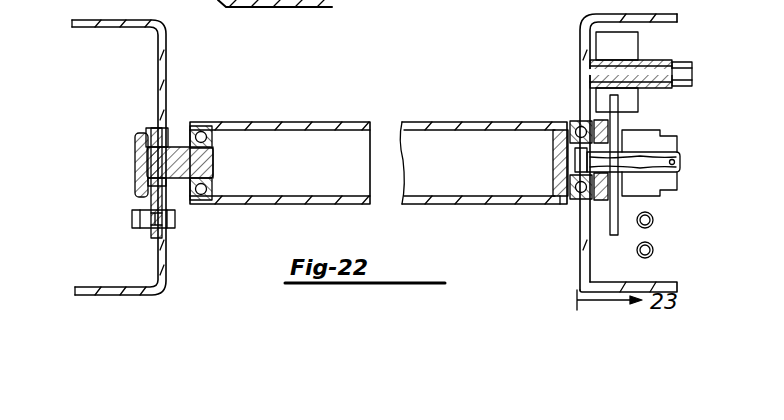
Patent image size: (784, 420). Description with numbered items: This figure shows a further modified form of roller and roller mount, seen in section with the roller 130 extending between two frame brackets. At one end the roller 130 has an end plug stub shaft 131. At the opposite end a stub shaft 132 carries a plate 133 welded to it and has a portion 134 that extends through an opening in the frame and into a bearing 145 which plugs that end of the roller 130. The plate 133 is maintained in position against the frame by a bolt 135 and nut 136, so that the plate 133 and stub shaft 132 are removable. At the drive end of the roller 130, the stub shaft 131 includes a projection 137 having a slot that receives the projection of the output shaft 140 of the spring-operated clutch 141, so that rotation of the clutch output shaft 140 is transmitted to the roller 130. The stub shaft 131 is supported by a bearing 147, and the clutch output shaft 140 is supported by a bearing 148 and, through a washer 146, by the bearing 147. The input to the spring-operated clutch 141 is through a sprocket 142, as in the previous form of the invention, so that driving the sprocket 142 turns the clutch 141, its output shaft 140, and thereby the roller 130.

The roller 130 is at (290, 122).
The end plug stub shaft 131 is at (555, 150).
The stub shaft 132 is at (140, 165).
The plate 133 is at (160, 128).
The portion 134 is at (213, 162).
The bolt 135 is at (78, 48).
The nut 136 is at (140, 232).
The projection 137 is at (567, 168).
The output shaft 140 is at (655, 163).
The spring-operated clutch 141 is at (678, 136).
The sprocket 142 is at (625, 103).
The bearing 145 is at (188, 128).
The washer 146 is at (560, 165).
The bearing 147 is at (572, 122).
The bearing 148 is at (612, 177).